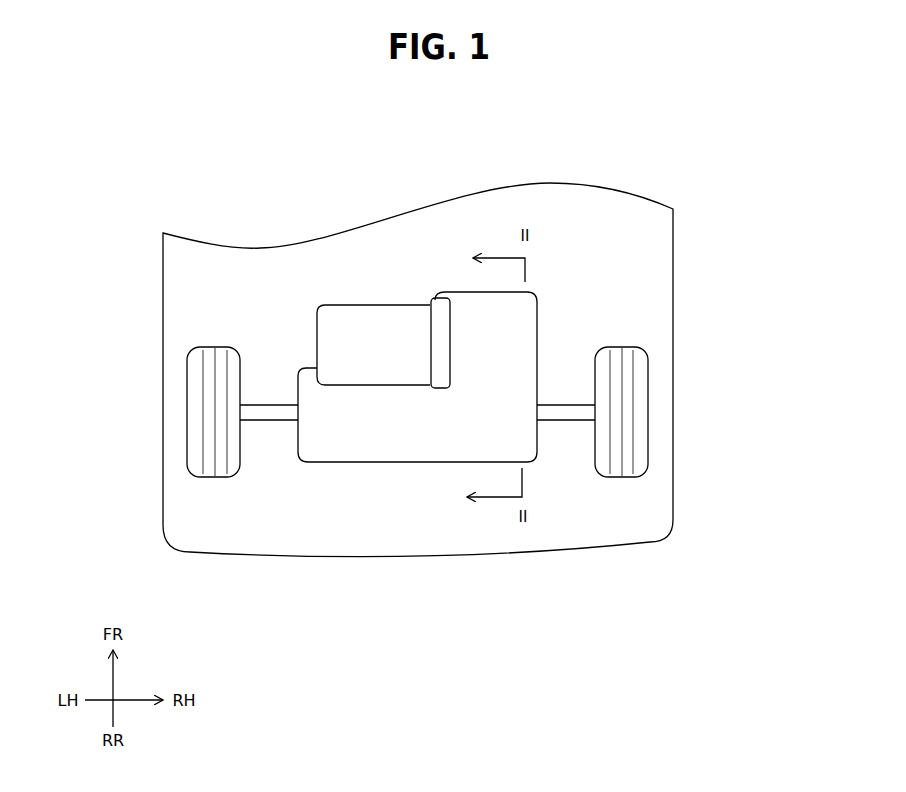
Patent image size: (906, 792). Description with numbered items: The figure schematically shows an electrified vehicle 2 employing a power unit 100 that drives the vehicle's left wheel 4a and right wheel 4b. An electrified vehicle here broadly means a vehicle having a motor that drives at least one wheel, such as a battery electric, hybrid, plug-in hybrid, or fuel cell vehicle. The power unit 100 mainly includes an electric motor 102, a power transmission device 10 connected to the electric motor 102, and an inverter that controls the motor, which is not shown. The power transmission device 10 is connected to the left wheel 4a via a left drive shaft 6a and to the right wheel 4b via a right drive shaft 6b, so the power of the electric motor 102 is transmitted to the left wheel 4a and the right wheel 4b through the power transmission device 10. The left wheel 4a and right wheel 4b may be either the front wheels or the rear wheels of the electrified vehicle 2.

The electrified vehicle 2 is at (707, 210).
The left wheel 4a is at (203, 400).
The right wheel 4b is at (633, 390).
The left drive shaft 6a is at (272, 412).
The right drive shaft 6b is at (567, 415).
The power transmission device 10 is at (443, 433).
The power unit 100 is at (527, 456).
The electric motor 102 is at (393, 365).